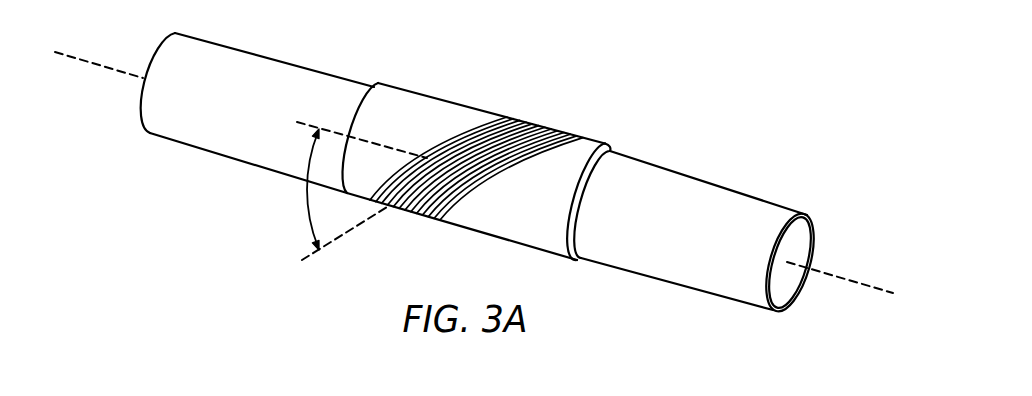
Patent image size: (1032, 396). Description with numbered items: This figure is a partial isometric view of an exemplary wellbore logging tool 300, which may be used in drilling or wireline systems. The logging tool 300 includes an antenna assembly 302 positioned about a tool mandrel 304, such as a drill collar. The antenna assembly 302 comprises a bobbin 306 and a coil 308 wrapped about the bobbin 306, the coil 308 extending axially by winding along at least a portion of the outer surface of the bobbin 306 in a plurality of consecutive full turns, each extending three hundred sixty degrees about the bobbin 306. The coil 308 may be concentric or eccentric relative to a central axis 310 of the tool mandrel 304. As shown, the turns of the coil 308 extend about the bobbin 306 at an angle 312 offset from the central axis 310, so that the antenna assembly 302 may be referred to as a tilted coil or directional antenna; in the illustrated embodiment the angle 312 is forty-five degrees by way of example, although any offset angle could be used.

The wellbore logging tool 300 is at (474, 172).
The antenna assembly 302 is at (506, 96).
The tool mandrel 304 is at (707, 182).
The bobbin 306 is at (410, 83).
The coil 308 is at (550, 126).
The central axis 310 is at (833, 275).
The angle 312 is at (340, 194).